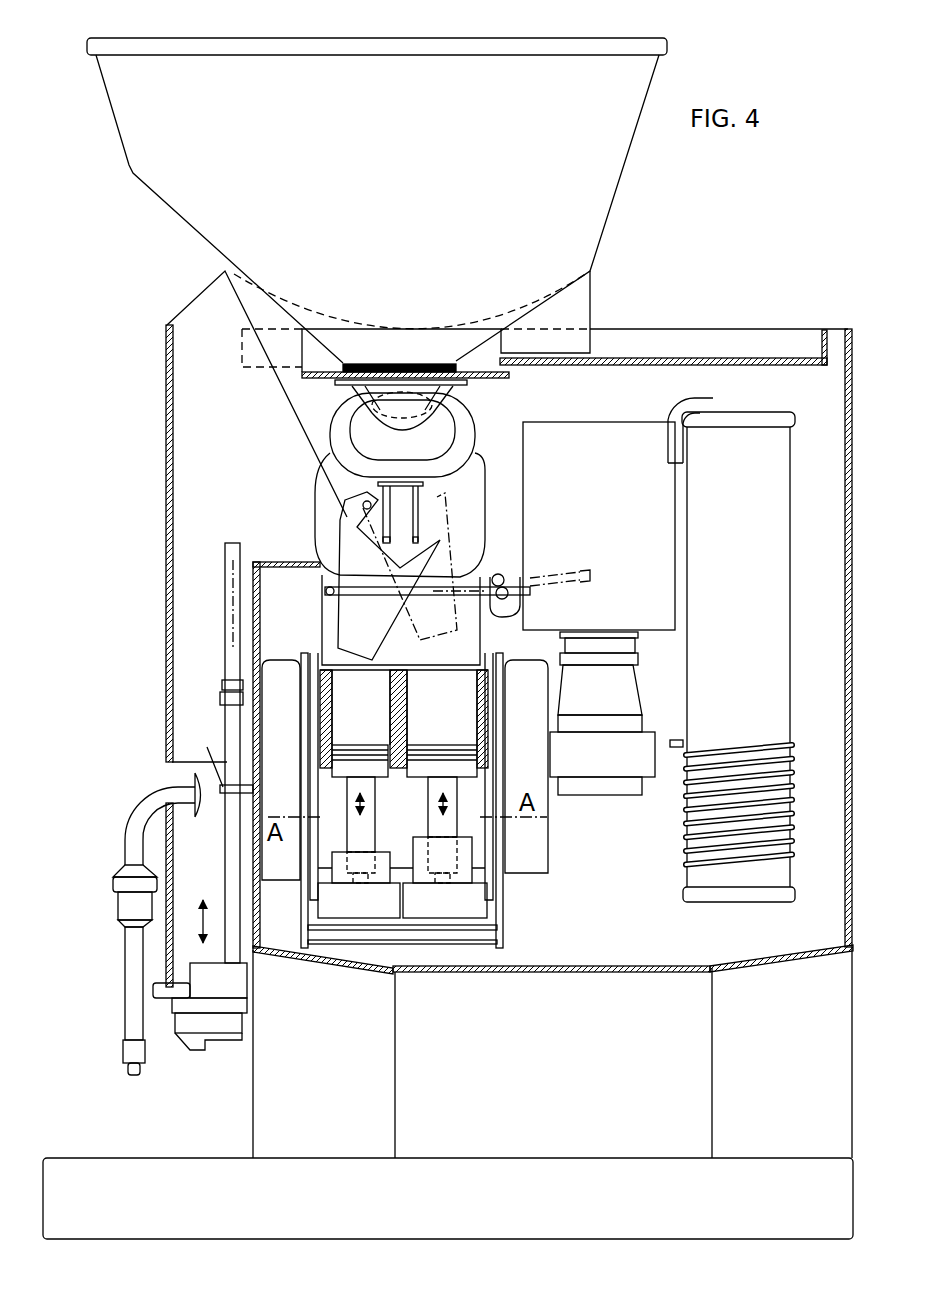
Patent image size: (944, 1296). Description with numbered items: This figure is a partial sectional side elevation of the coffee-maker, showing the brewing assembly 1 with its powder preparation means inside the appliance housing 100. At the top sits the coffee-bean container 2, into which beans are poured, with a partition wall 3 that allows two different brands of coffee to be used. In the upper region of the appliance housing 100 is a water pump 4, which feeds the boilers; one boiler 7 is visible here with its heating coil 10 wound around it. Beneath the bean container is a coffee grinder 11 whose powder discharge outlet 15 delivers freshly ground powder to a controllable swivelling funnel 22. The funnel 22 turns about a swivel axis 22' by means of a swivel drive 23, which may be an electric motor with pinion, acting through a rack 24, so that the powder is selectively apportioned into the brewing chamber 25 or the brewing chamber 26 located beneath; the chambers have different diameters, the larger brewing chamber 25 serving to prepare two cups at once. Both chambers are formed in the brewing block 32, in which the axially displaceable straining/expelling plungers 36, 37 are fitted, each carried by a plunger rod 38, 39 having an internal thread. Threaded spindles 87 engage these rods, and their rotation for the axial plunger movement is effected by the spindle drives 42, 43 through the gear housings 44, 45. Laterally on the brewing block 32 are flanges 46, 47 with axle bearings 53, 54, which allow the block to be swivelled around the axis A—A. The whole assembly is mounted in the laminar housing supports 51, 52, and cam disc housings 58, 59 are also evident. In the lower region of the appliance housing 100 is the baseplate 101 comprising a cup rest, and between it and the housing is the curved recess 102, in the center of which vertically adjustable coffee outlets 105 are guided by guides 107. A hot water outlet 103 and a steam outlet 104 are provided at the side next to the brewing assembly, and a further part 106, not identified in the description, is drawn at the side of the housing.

The brewing assembly 1 is at (134, 400).
The coffee-bean container 2 is at (151, 198).
The partition wall 3 is at (377, 241).
The water pump 4 is at (575, 440).
The boiler 7 is at (763, 523).
The heating coil 10 is at (742, 767).
The coffee grinder 11 is at (485, 418).
The powder discharge outlet 15 is at (405, 498).
The controllable swivelling funnel 22 is at (397, 576).
The swivel axis 22' is at (312, 512).
The swivel drive 23 is at (512, 605).
The rack 24 is at (573, 577).
The brewing chamber 25 is at (432, 695).
The brewing chamber 26 is at (349, 695).
The brewing block 32 is at (402, 770).
The straining/expelling plunger 36 is at (448, 768).
The straining/expelling plunger 37 is at (352, 768).
The plunger rod 38 is at (452, 803).
The plunger rod 39 is at (357, 840).
The spindle drive 42 is at (419, 872).
The spindle drive 43 is at (337, 872).
The gear housing 44 is at (466, 906).
The gear housing 45 is at (383, 908).
The flange 46 is at (490, 850).
The flange 47 is at (297, 857).
The housing support 51 is at (505, 913).
The housing support 52 is at (298, 925).
The axle bearing 53 is at (507, 820).
The axle bearing 54 is at (303, 810).
The cam disc housing 58 is at (516, 697).
The cam disc housing 59 is at (287, 673).
The threaded spindle 87 is at (445, 876).
The appliance housing 100 is at (710, 328).
The baseplate 101 is at (72, 1165).
The curved recess 102 is at (297, 1087).
The hot water outlet 103 is at (133, 968).
The steam outlet 104 is at (132, 908).
The coffee outlet 105 is at (180, 1045).
The cover panel 106 is at (202, 314).
The guide 107 is at (207, 747).